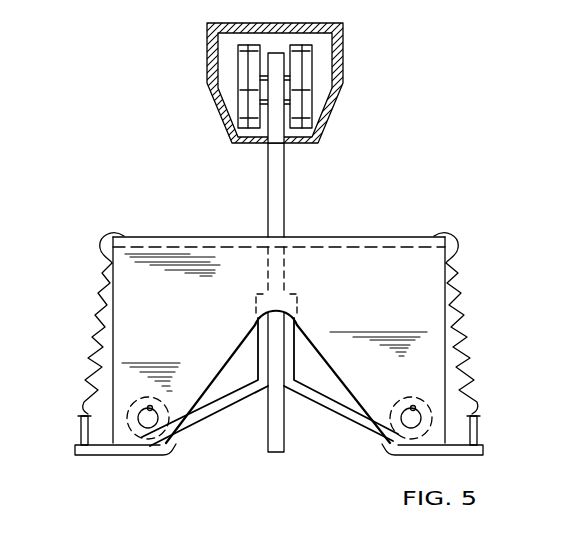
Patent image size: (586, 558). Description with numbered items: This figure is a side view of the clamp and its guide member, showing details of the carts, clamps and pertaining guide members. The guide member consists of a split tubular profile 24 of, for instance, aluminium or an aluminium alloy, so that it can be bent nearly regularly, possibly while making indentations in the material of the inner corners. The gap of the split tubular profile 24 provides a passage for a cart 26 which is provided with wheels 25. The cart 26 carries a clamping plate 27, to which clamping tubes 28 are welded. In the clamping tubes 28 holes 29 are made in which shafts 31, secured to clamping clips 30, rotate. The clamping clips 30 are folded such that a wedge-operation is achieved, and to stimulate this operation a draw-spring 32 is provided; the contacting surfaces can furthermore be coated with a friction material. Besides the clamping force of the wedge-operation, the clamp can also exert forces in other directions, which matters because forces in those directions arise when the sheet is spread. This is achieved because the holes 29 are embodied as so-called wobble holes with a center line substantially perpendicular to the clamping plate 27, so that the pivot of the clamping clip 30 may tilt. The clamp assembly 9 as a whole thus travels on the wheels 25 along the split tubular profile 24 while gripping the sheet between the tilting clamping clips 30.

The valve assembly 9 is at (162, 237).
The split tubular profile 24 is at (337, 43).
The wheels 25 is at (248, 63).
The cart 26 is at (277, 60).
The clamping plate 27 is at (266, 447).
The clamping tubes 28 is at (408, 238).
The holes 29 is at (188, 427).
The clamping clips 30 is at (233, 397).
The shafts 31 is at (163, 448).
The draw-spring 32 is at (114, 313).